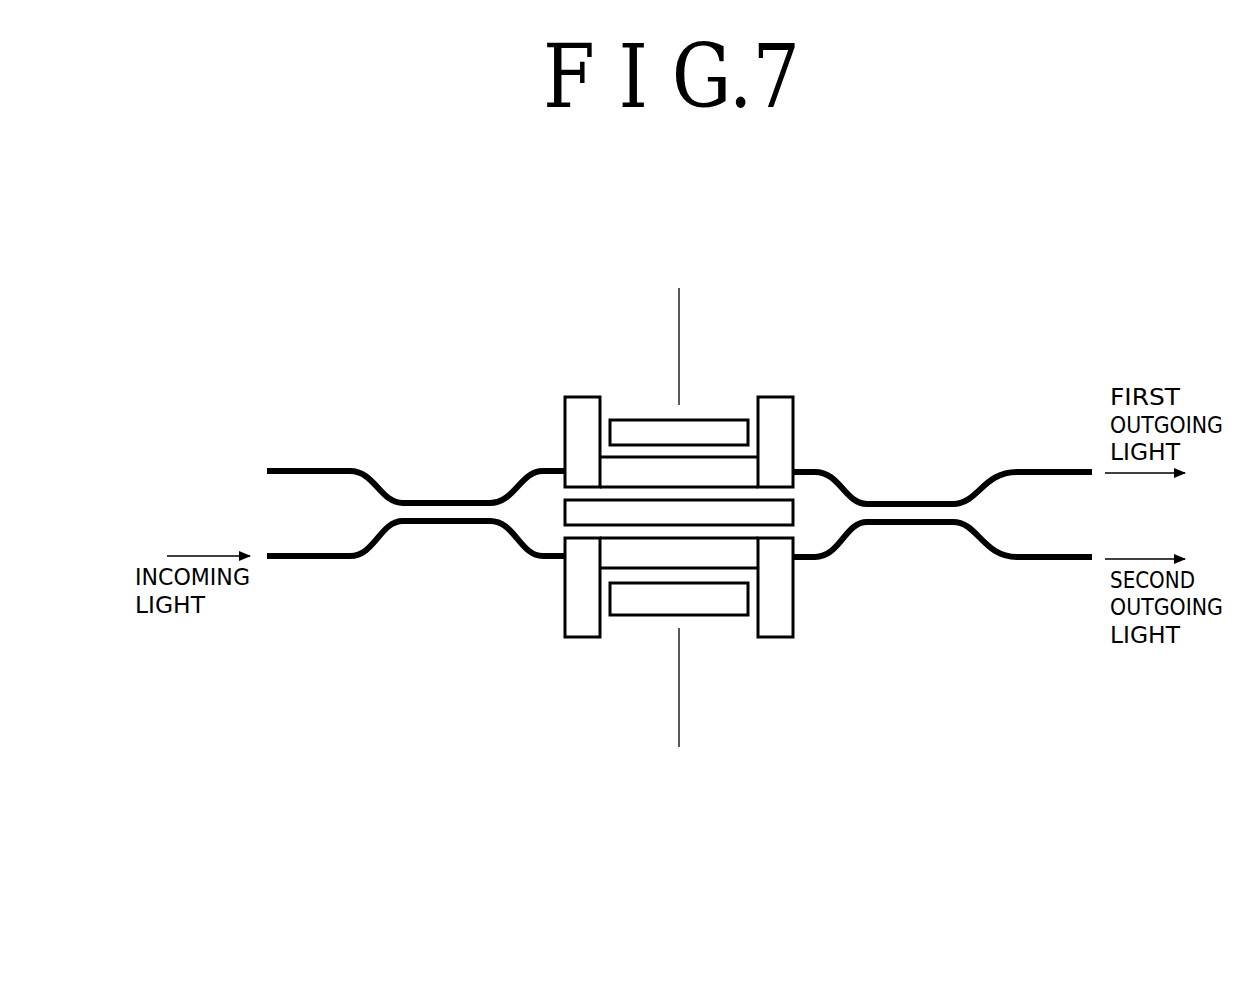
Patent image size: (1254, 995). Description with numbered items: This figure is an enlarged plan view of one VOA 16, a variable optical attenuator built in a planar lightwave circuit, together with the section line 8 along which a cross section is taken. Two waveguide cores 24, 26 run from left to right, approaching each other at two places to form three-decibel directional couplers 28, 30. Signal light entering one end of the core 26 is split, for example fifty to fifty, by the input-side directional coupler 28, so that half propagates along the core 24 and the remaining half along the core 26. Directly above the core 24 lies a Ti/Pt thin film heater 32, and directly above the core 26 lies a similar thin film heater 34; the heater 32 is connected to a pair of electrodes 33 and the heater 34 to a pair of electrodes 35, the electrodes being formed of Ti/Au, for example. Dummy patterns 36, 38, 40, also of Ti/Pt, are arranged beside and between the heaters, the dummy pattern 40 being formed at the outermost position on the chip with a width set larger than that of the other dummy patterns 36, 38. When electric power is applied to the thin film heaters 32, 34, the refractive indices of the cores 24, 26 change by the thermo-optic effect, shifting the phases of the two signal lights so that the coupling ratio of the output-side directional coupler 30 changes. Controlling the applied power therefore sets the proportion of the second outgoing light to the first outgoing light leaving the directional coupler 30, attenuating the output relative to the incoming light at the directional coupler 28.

The line 8— 8 is at (676, 303).
The VOA 16 is at (762, 320).
The core 24 is at (521, 484).
The core 26 is at (521, 539).
The directional coupler 28 is at (440, 530).
The directional coupler 30 is at (915, 537).
The thin film heater 32 is at (679, 381).
The electrodes 33 is at (585, 405).
The thin film heater 34 is at (679, 655).
The electrodes 35 is at (583, 629).
The dummy pattern 36 is at (652, 427).
The dummy pattern 38 is at (780, 515).
The dummy pattern 40 is at (652, 611).